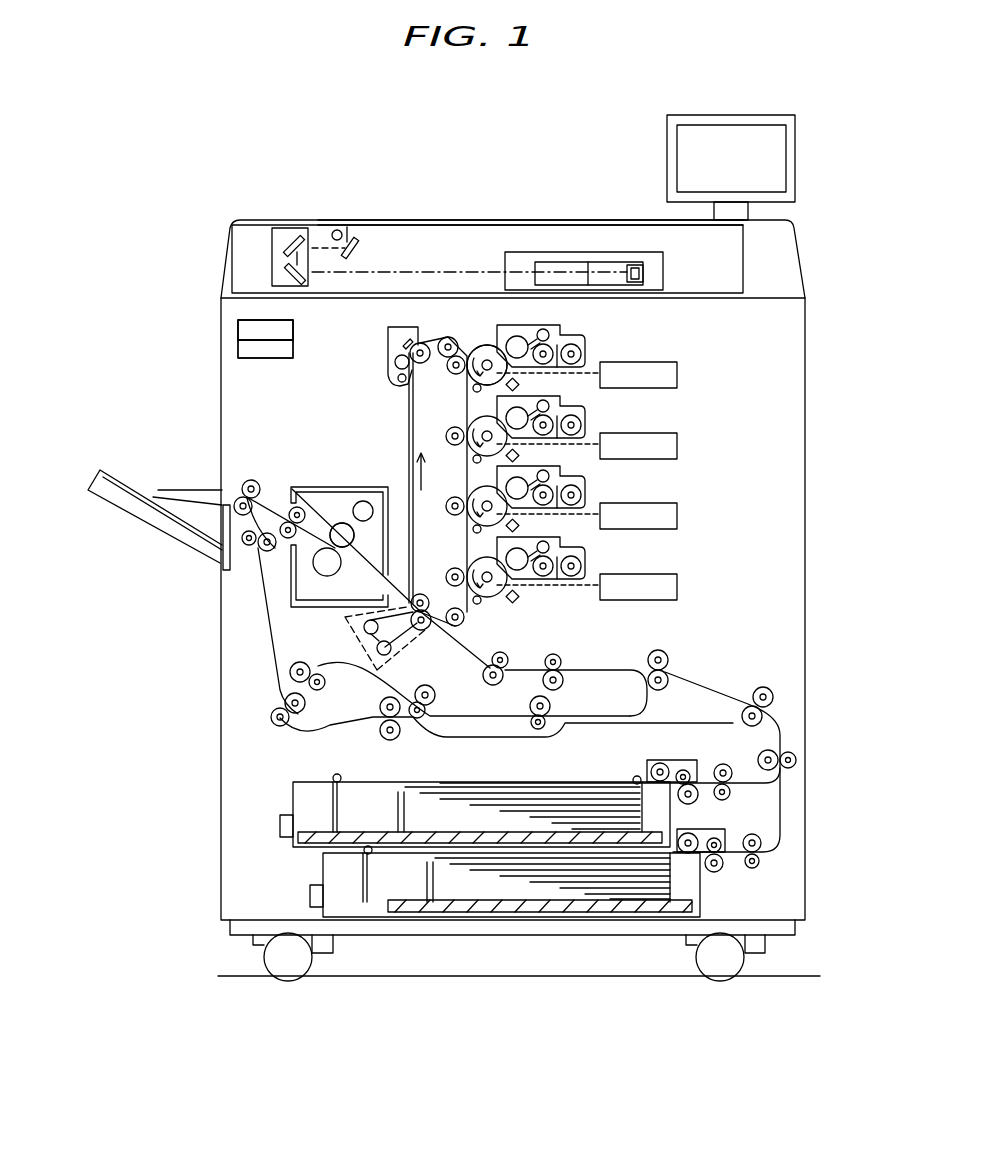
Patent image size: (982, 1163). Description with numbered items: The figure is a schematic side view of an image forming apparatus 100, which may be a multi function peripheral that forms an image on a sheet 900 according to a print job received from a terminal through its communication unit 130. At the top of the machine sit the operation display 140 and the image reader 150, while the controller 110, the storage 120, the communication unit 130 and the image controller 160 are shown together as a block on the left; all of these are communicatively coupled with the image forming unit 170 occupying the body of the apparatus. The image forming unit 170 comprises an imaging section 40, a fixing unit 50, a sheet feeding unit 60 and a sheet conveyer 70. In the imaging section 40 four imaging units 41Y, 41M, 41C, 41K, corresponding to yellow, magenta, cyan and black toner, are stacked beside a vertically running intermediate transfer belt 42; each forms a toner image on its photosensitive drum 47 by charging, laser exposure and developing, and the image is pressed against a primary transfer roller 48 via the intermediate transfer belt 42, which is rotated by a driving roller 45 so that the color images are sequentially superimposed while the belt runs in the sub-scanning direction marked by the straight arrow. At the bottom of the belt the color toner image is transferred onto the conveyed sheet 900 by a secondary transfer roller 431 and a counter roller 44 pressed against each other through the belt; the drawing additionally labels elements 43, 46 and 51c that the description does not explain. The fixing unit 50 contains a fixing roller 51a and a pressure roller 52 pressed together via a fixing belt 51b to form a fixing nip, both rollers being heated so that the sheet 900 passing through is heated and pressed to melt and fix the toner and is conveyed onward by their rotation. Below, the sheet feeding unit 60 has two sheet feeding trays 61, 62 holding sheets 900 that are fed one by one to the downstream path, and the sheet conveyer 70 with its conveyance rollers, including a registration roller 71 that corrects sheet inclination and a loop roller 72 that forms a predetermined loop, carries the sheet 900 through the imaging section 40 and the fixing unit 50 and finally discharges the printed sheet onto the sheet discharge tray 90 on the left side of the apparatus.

The image forming apparatus 100 is at (490, 130).
The operation display 140 is at (797, 160).
The image reader 150 is at (713, 268).
The controller 110 is at (238, 331).
The storage 120 is at (265, 330).
The communication unit 130 is at (265, 330).
The image controller 160 is at (238, 348).
The image forming unit 170 is at (333, 417).
The imaging section 40 is at (416, 470).
The intermediate transfer belt 42 is at (410, 428).
The roller 46 is at (450, 339).
The photosensitive drum 47 is at (478, 343).
The primary transfer roller 48 is at (452, 375).
The counter roller 44 is at (426, 593).
The driving roller 45 is at (465, 618).
The imaging unit 41Y is at (613, 337).
The imaging unit 41M is at (613, 410).
The imaging unit 41C is at (613, 480).
The imaging unit 41K is at (613, 550).
The secondary transfer unit 43 is at (403, 649).
The secondary transfer roller 431 is at (437, 630).
The fixing unit 50 is at (368, 538).
The fixing roller 51a is at (337, 530).
The fixing belt 51b is at (342, 527).
The separation roller 51c is at (365, 505).
The pressure roller 52 is at (326, 578).
The sheet discharge tray 90 is at (150, 520).
The sheet conveyer 70 is at (631, 647).
The registration roller 71 is at (505, 658).
The loop roller 72 is at (558, 658).
The sheet feeding unit 60 is at (419, 845).
The sheet feeding tray 61 is at (293, 796).
The sheet feeding tray 62 is at (323, 870).
The sheet 900 is at (592, 790).